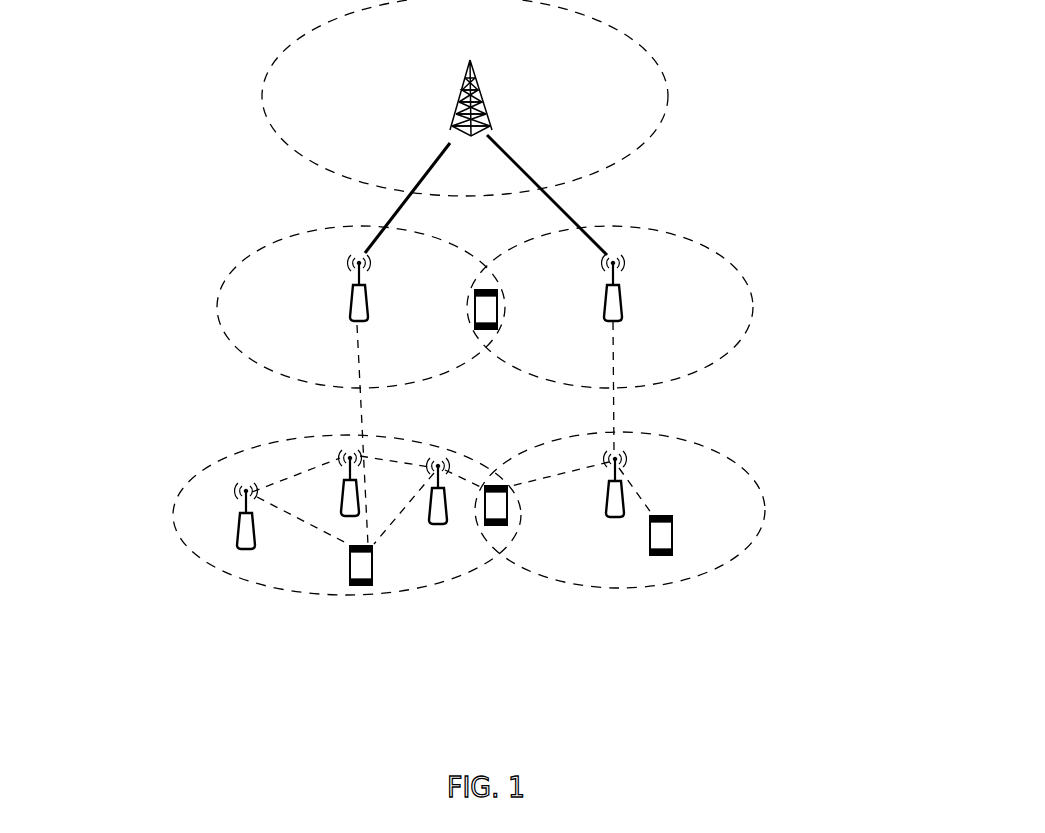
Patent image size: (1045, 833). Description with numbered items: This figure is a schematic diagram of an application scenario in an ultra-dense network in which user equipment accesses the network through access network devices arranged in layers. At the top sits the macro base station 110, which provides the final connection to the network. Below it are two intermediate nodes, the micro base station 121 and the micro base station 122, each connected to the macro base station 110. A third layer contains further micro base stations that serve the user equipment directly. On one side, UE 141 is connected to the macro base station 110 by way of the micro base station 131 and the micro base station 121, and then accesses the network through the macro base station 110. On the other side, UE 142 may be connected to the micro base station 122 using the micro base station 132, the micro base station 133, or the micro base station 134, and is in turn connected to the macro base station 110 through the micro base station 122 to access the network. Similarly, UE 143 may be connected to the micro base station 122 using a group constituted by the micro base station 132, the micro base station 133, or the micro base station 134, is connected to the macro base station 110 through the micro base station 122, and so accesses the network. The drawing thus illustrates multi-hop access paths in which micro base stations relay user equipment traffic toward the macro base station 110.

The macro base station 110 is at (485, 87).
The micro base station 121 is at (632, 293).
The micro base station 122 is at (340, 285).
The micro base station 131 is at (612, 518).
The micro base station 132 is at (340, 515).
The micro base station 133 is at (440, 525).
The micro base station 134 is at (232, 548).
The UE 141 is at (660, 557).
The UE 142 is at (360, 587).
The UE 143 is at (493, 529).